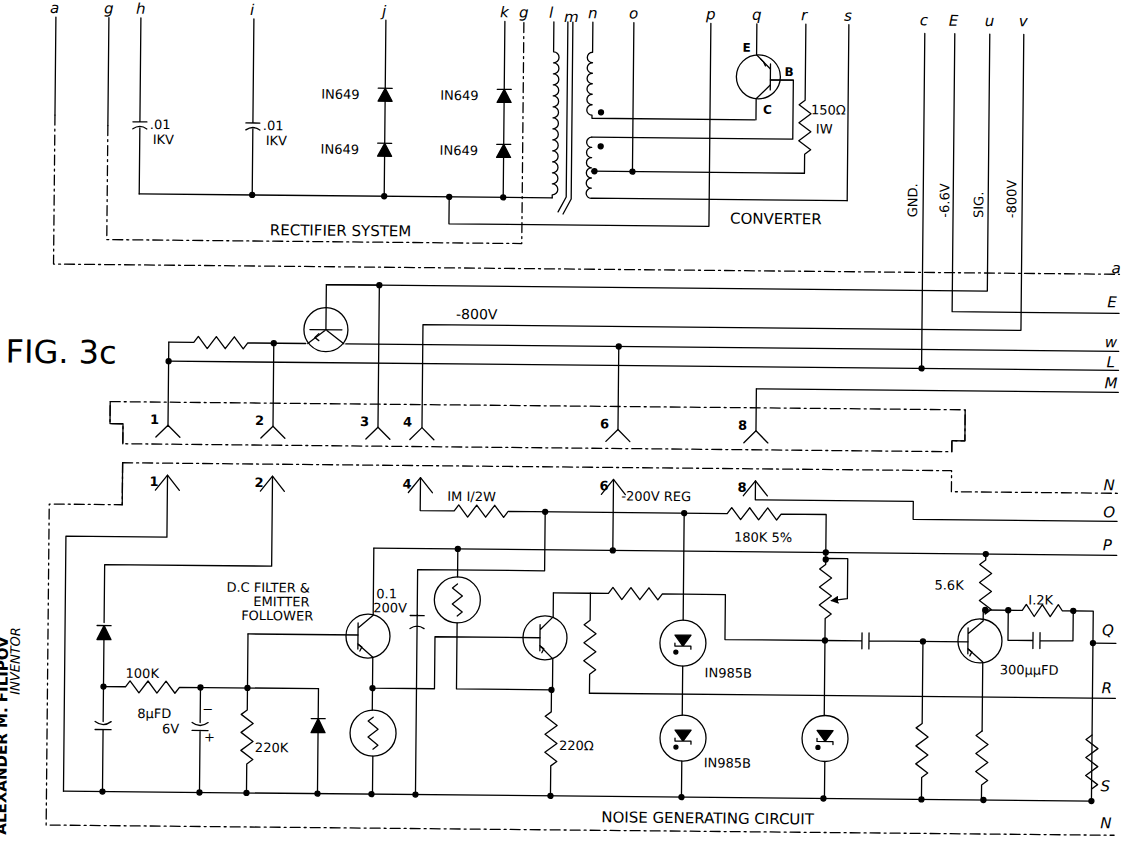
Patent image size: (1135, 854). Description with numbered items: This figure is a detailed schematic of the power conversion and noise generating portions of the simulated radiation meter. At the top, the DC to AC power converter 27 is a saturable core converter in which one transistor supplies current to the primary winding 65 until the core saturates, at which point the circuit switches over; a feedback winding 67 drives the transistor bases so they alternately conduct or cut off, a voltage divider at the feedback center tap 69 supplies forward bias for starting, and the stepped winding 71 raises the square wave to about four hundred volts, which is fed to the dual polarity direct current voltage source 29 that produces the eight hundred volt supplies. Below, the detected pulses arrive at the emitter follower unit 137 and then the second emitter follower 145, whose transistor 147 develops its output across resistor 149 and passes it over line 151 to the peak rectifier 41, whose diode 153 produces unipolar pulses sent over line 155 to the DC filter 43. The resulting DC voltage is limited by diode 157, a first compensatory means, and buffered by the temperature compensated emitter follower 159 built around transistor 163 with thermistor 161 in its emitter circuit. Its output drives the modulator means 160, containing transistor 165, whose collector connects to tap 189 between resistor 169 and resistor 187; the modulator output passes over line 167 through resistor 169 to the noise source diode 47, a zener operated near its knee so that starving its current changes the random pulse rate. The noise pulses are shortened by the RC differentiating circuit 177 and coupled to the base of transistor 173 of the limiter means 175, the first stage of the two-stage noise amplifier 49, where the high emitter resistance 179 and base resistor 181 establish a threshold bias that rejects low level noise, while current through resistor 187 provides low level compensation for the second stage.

The DC to AC power converter 27 is at (845, 200).
The dual polarity direct current voltage source 29 is at (523, 238).
The peak rectifier 41 is at (95, 657).
The DC filter 43 is at (165, 772).
The noise source diode 47 is at (805, 735).
The two-stage noise amplifier 49 is at (1086, 733).
The primary winding 65 is at (594, 90).
The feedback winding 67 is at (596, 188).
The feedback center tap 69 is at (633, 171).
The stepped winding 71 is at (548, 146).
The emitter follower unit 137 is at (402, 318).
The second emitter follower 145 is at (292, 318).
The transistor 147 is at (338, 322).
The resistor 149 is at (226, 352).
The line 151 is at (275, 533).
The diode 153 is at (123, 611).
The line 155 is at (108, 662).
The diode 157 is at (324, 740).
The temperature compensated emitter follower 159 is at (389, 664).
The modulator means 160 is at (490, 722).
The thermistor 161 is at (380, 757).
The transistor 163 is at (350, 647).
The transistor 165 is at (527, 648).
The line 167 is at (552, 594).
The resistor 169 is at (708, 607).
The transistor 173 is at (989, 660).
The limiter means 175 is at (962, 662).
The RC differentiating circuit 177 is at (912, 670).
The emitter resistance 179 is at (989, 768).
The base resistor 181 is at (928, 770).
The resistor 187 is at (594, 676).
The tap 189 is at (818, 578).